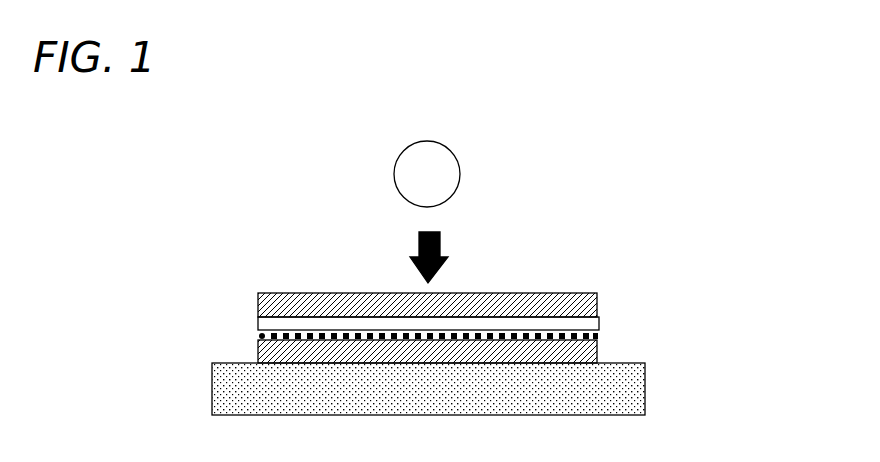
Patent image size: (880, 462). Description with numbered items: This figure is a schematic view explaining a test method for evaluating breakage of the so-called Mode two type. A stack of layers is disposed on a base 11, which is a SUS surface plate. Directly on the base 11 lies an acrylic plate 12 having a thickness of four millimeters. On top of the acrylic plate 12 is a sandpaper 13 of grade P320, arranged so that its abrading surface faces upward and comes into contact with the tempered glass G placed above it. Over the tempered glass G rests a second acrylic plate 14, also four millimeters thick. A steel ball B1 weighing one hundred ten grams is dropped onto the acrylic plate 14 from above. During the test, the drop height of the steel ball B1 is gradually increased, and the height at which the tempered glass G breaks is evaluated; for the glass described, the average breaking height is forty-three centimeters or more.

The steel ball B1 is at (453, 178).
The acrylic plate 14 is at (586, 302).
The tempered glass G is at (258, 325).
The sandpaper 13 is at (258, 335).
The acrylic plate 12 is at (598, 350).
The base 11 is at (597, 397).